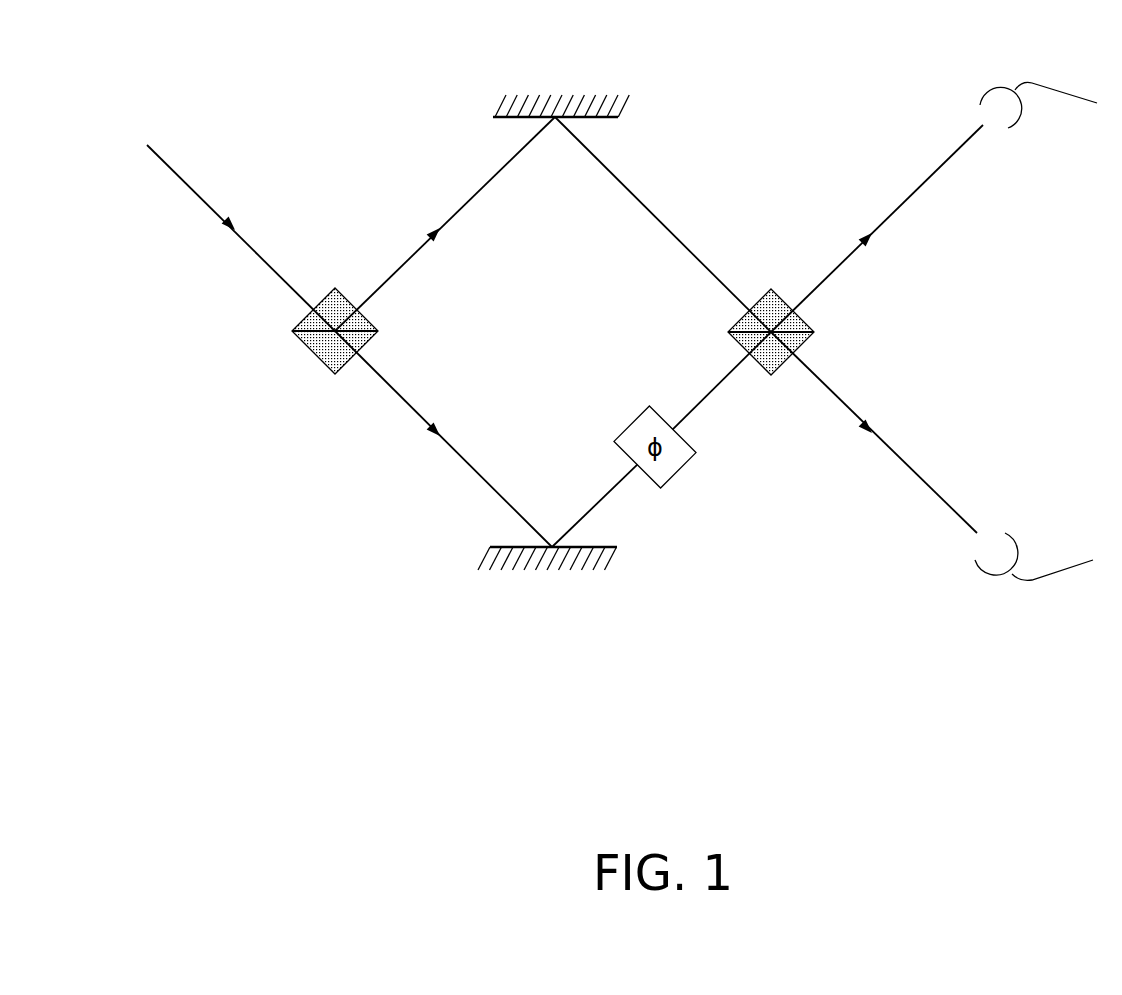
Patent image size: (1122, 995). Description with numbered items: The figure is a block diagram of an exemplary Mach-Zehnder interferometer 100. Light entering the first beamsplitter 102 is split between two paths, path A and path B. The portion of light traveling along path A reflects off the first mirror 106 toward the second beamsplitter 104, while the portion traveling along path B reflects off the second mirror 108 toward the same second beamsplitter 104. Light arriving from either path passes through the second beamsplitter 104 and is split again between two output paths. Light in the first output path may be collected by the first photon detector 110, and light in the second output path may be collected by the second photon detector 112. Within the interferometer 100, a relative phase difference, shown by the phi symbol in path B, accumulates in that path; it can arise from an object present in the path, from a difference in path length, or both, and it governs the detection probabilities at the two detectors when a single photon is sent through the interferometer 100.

The Mach-Zehnder interferometer 100 is at (338, 636).
The first beamsplitter 102 is at (312, 348).
The second beamsplitter 104 is at (812, 320).
The first mirror 106 is at (607, 117).
The second mirror 108 is at (507, 546).
The first photon detector 110 is at (983, 568).
The second photon detector 112 is at (999, 88).